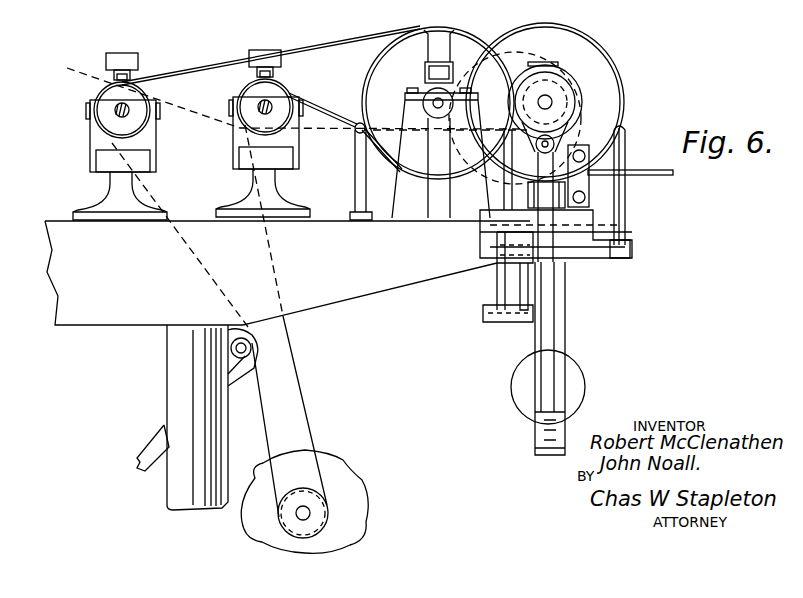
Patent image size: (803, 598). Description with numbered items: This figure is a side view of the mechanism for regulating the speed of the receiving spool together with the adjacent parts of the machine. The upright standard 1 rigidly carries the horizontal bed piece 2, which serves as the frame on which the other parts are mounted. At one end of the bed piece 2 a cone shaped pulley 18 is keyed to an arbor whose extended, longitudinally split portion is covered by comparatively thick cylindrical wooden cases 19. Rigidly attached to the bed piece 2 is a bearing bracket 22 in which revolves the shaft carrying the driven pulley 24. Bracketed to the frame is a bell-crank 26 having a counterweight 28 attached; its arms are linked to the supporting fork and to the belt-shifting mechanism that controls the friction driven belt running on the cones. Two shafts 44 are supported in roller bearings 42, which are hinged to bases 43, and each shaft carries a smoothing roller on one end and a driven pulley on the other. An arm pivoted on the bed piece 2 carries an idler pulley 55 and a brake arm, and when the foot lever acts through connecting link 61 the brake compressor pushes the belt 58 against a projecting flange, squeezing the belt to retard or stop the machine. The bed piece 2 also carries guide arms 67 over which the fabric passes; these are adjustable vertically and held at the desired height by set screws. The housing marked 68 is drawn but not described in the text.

The standard 1 is at (170, 492).
The bed piece 2 is at (287, 273).
The cone shaped pulley 18 is at (598, 48).
The cylindrical wooden case 19 is at (569, 100).
The bearing bracket 22 is at (477, 124).
The driven pulley 24 is at (441, 32).
The bell-crank 26 is at (550, 336).
The counterweight 28 is at (575, 376).
The roller bearings 42 is at (150, 143).
The bases 43 is at (96, 198).
The shafts 44 is at (117, 111).
The idler pulley 55 is at (243, 367).
The belt 58 is at (310, 31).
The connecting link 61 is at (157, 429).
The guide arms 67 is at (356, 123).
The pulley housing 68 is at (352, 493).